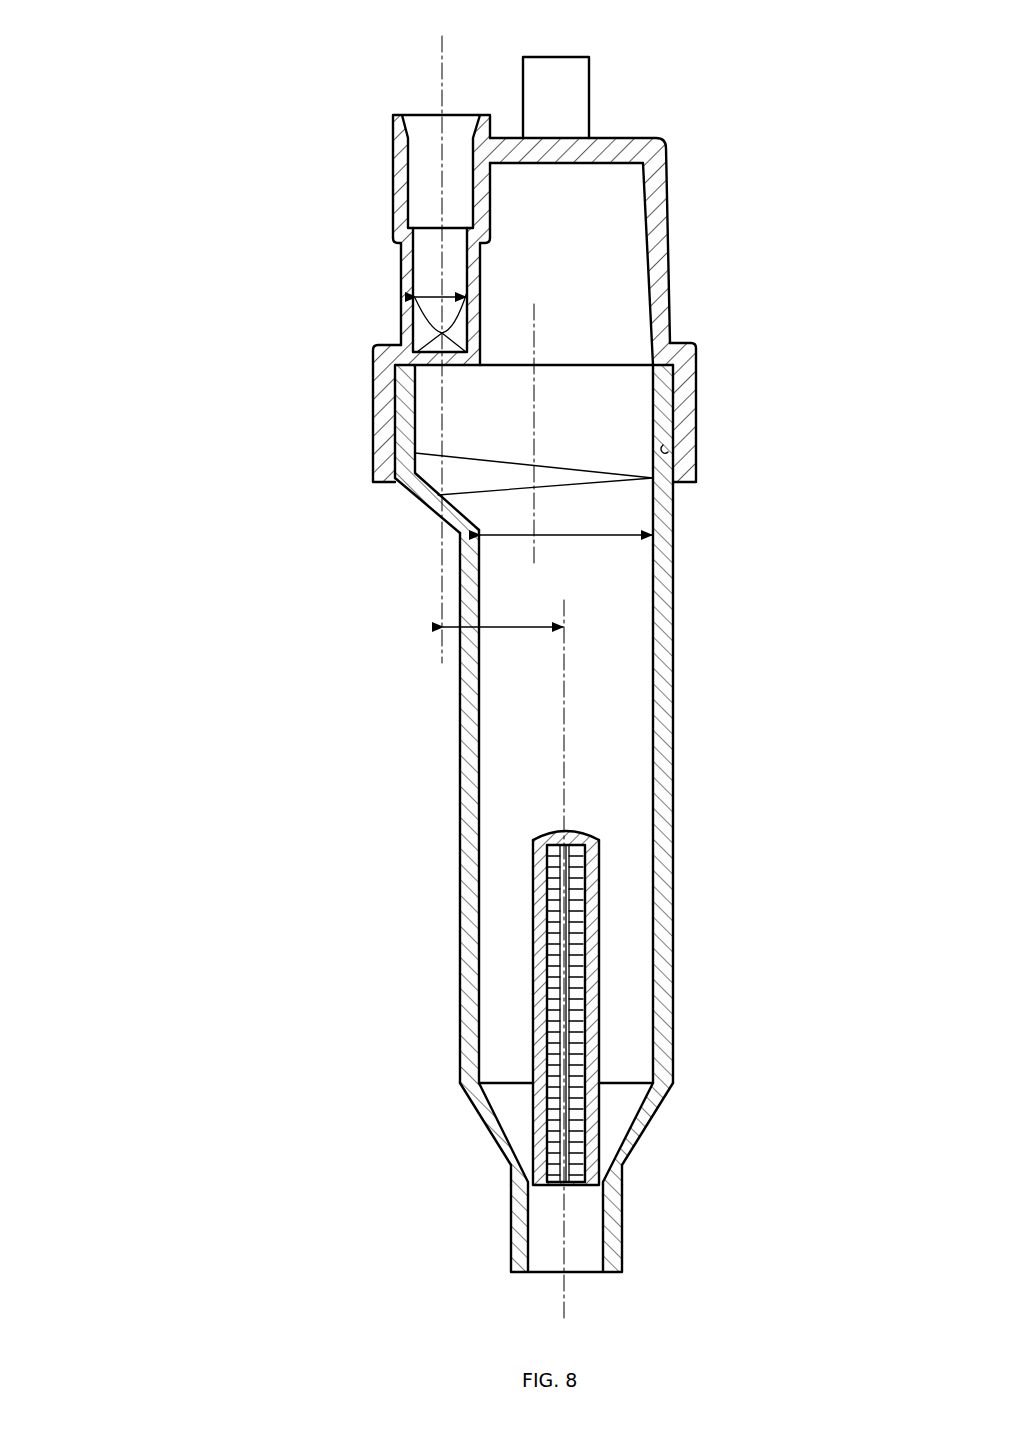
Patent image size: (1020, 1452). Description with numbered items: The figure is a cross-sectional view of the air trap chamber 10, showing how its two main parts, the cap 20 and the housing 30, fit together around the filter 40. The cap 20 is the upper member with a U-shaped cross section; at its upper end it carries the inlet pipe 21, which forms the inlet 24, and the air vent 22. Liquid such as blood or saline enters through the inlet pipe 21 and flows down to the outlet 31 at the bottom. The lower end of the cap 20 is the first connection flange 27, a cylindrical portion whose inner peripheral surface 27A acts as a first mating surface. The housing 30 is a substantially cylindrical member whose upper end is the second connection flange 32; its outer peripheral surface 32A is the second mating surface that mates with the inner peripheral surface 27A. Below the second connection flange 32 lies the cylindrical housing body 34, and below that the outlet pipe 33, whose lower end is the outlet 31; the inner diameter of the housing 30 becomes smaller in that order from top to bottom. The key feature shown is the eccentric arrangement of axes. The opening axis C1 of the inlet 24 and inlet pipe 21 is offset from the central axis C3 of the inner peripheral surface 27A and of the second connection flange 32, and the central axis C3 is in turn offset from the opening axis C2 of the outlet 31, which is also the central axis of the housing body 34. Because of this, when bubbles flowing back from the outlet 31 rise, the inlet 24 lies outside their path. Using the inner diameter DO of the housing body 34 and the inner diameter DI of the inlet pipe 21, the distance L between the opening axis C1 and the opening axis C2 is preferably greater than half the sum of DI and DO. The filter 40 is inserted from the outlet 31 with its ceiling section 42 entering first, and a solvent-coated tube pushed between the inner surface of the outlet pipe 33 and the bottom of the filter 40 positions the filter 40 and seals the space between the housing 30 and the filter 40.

The air trap chamber 10 is at (175, 289).
The cap 20 is at (683, 254).
The inlet pipe 21 is at (399, 273).
The air vent 22 is at (558, 54).
The inlet 24 is at (417, 114).
The first connection flange 27 is at (683, 407).
The inner peripheral surface 27A is at (672, 453).
The housing 30 is at (685, 924).
The outlet 31 is at (580, 1273).
The second connection flange 32 is at (405, 412).
The outer peripheral surface 32A is at (397, 426).
The outlet pipe 33 is at (615, 1220).
The housing body 34 is at (660, 822).
The filter 40 is at (614, 1014).
The ceiling section 42 is at (575, 835).
The opening axis of the inlet C1 is at (439, 337).
The opening axis of the outlet C2 is at (563, 948).
The central axis C3 is at (533, 422).
The inner diameter of the inlet pipe DI is at (426, 300).
The inner diameter of the housing body DO is at (566, 522).
The distance L is at (503, 618).